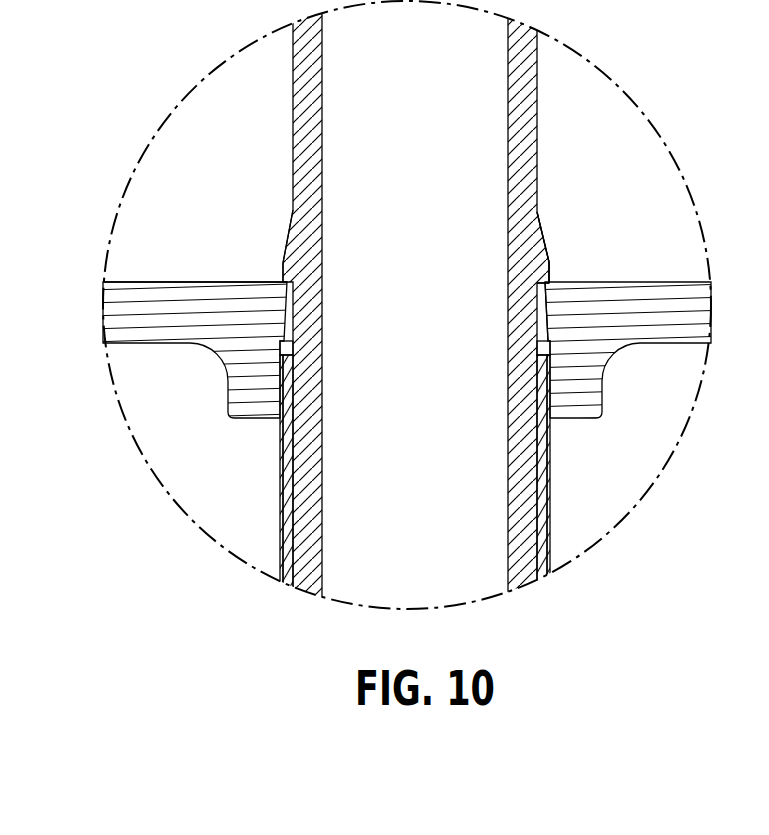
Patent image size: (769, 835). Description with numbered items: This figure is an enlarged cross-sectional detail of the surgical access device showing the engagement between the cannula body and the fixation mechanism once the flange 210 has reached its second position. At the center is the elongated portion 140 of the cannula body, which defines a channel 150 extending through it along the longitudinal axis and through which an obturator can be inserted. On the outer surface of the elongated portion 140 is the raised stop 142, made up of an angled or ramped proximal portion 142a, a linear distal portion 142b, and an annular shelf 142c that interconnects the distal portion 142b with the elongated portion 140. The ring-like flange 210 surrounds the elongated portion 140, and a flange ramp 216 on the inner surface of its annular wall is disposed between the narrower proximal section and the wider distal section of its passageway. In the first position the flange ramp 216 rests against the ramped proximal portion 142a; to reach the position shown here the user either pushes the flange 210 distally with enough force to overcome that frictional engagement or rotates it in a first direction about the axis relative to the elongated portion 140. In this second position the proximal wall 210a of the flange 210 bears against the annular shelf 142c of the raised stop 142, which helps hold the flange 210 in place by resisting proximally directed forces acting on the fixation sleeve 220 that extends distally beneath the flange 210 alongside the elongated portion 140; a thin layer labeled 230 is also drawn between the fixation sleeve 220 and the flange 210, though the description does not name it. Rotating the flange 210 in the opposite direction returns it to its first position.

The elongated portion 140 is at (519, 123).
The raised stop 142 is at (283, 263).
The ramped proximal portion 142a is at (540, 234).
The linear distal portion 142b is at (550, 261).
The annular shelf 142c is at (550, 282).
The channel 150 is at (433, 258).
The flange 210 is at (122, 297).
The proximal wall 210a is at (190, 283).
The flange ramp 216 is at (550, 335).
The fixation sleeve 220 is at (284, 491).
The liner 230 is at (279, 442).